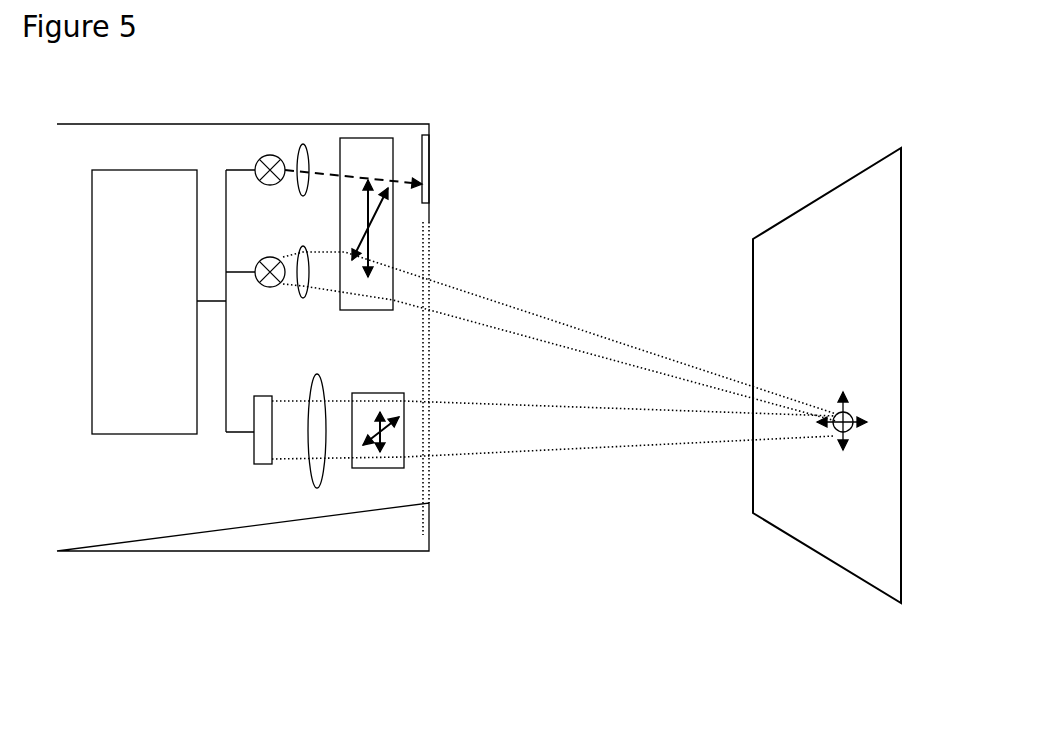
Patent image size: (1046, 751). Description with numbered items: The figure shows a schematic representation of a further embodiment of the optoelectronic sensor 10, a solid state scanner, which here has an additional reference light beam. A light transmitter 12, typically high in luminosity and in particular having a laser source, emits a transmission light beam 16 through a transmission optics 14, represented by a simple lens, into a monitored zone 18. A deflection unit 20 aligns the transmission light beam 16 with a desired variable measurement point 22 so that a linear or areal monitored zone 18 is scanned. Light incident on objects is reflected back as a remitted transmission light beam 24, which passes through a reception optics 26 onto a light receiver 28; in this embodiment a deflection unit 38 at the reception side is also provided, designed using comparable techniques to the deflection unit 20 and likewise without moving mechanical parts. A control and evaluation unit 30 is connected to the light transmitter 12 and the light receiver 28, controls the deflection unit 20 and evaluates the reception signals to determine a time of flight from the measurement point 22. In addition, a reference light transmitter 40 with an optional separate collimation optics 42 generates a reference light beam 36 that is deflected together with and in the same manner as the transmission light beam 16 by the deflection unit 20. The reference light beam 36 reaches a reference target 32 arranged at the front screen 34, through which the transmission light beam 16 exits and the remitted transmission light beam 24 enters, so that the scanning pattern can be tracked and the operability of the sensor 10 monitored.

The optoelectronic sensor 10 is at (422, 78).
The light transmitter 12 is at (266, 287).
The transmission optics 14 is at (305, 289).
The transmission light beam 16 is at (604, 340).
The monitored zone 18 is at (688, 188).
The deflection unit 20 is at (380, 241).
The measurement point 22 is at (852, 408).
The remitted transmission light beam 24 is at (698, 408).
The reception optics 26 is at (310, 438).
The light receiver 28 is at (255, 452).
The control and evaluation unit 30 is at (122, 313).
The reference target 32 is at (430, 160).
The front screen 34 is at (429, 503).
The reference light beam 36 is at (318, 170).
The deflection unit at the reception side 38 is at (383, 462).
The reference light transmitter 40 is at (258, 158).
The second lens 42 is at (300, 150).